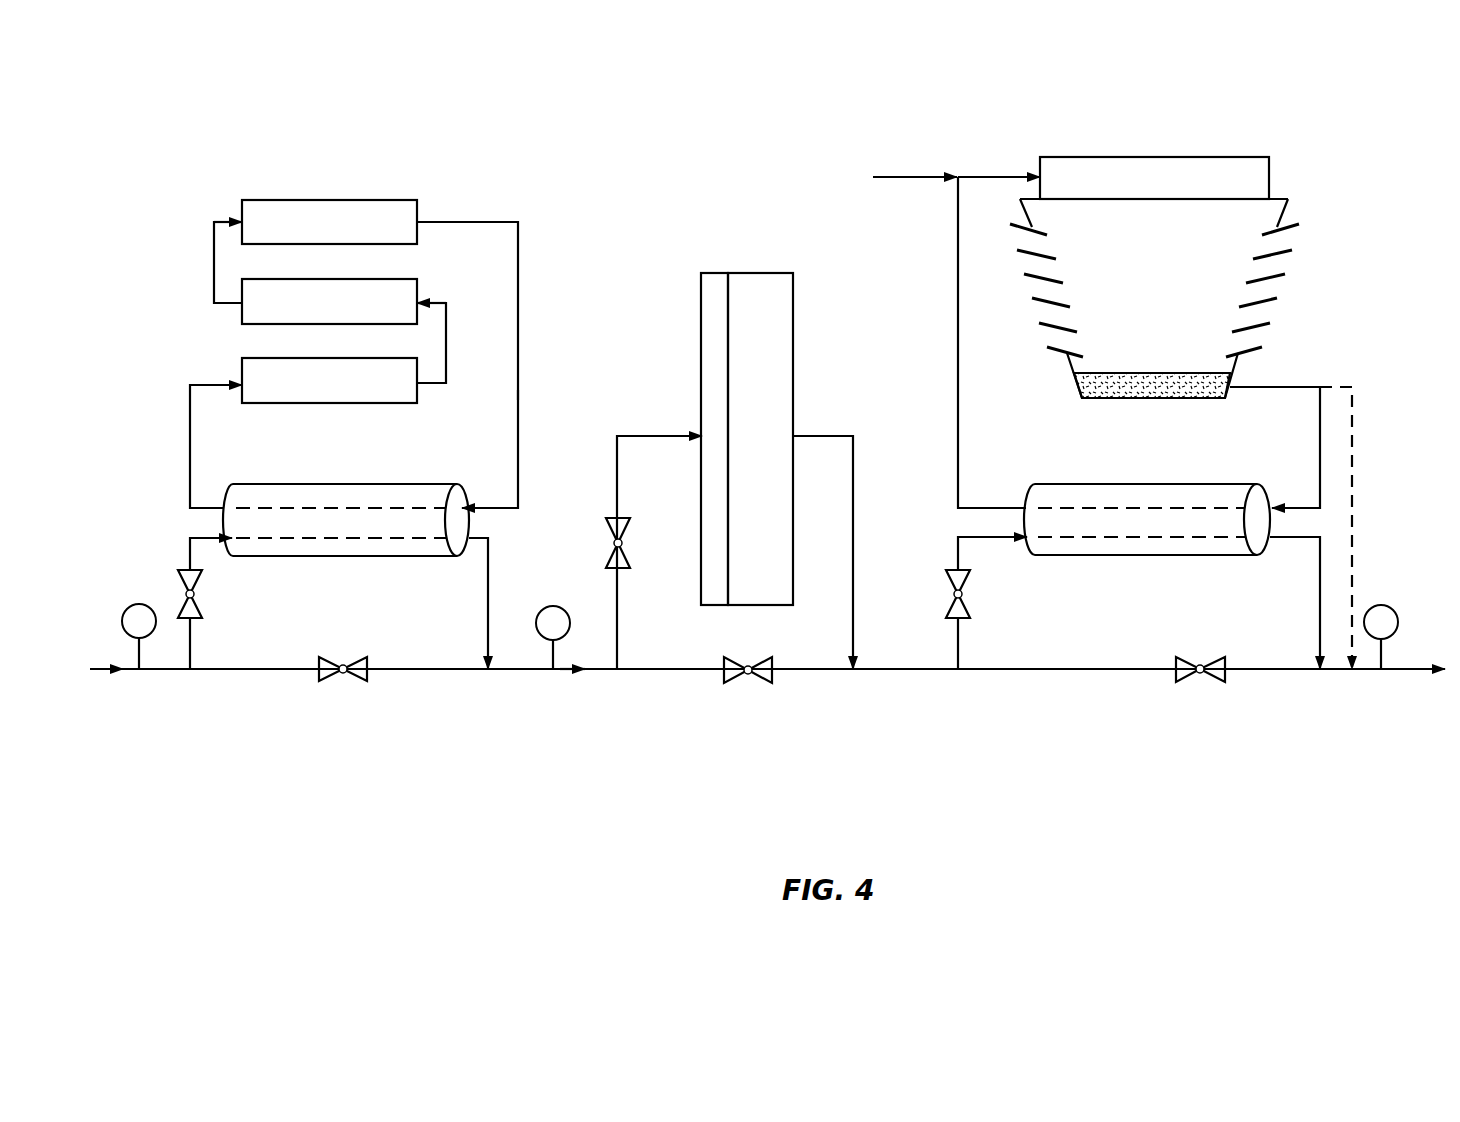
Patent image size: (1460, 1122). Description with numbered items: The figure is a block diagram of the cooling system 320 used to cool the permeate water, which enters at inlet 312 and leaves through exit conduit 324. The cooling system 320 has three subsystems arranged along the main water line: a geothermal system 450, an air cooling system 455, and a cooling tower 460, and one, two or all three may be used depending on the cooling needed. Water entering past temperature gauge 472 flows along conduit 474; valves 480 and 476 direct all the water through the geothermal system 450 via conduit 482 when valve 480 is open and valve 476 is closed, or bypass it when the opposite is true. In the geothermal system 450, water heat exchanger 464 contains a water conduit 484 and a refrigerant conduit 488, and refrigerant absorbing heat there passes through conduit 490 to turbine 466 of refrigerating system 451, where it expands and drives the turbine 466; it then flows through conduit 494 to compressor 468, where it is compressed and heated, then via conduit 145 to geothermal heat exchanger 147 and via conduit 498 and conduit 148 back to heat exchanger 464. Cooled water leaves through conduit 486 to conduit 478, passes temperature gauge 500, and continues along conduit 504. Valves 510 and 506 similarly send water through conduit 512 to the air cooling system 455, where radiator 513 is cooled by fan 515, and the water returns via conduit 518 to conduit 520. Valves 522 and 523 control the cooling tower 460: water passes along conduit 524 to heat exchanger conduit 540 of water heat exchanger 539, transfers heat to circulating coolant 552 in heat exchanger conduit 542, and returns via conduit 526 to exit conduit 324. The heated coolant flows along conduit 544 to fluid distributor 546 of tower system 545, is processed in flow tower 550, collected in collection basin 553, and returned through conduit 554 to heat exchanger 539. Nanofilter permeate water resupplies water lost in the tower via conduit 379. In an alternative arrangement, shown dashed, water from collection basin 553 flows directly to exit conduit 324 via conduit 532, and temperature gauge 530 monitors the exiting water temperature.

The cooling system 320 is at (300, 820).
The inlet line 312 is at (160, 671).
The exit conduit 324 is at (1392, 672).
The conduit 145 is at (213, 247).
The geothermal heat exchanger 147 is at (388, 200).
The conduit 148 is at (520, 302).
The geothermal system 450 is at (374, 419).
The refrigerating system 451 is at (329, 289).
The air cooling system 455 is at (761, 413).
The cooling tower 460 is at (1111, 372).
The water heat exchanger 464 is at (346, 542).
The turbine 466 is at (375, 403).
The compressor 468 is at (392, 279).
The temperature sensor 472 is at (137, 604).
The conduit segment 474 is at (245, 672).
The valve 476 is at (358, 682).
The conduit segment 478 is at (520, 672).
The valve 480 is at (202, 608).
The inlet line to heat exchanger 482 is at (190, 548).
The water conduit 484 is at (305, 538).
The outlet line from heat exchanger 486 is at (490, 550).
The refrigerant conduit 488 is at (365, 509).
The conduit 490 is at (192, 450).
The conduit 494 is at (446, 353).
The geothermal outlet line 498 is at (475, 222).
The temperature sensor 500 is at (553, 606).
The conduit segment 504 is at (665, 672).
The valve 506 is at (758, 683).
The valve 510 is at (630, 562).
The fan inlet line 512 is at (652, 435).
The radiator 513 is at (713, 322).
The fan 515 is at (782, 323).
The conduit 518 is at (854, 458).
The conduit 520 is at (908, 672).
The valve 522 is at (972, 608).
The valve 523 is at (1195, 682).
The conduit 524 is at (958, 542).
The conduit 526 is at (1319, 580).
The temperature gauge 530 is at (1395, 613).
The conduit 532 is at (1353, 506).
The water heat exchanger 539 is at (1147, 498).
The heat exchanger conduit 540 is at (1127, 537).
The heat exchanger conduit 542 is at (1163, 510).
The conduit 544 is at (957, 227).
The tower system 545 is at (1184, 274).
The fluid distributor 546 is at (1197, 167).
The flow tower 550 is at (1283, 252).
The circulating coolant 552 is at (1103, 388).
The collection basin 553 is at (1147, 398).
The conduit 554 is at (1297, 387).
The conduit 379 is at (908, 177).